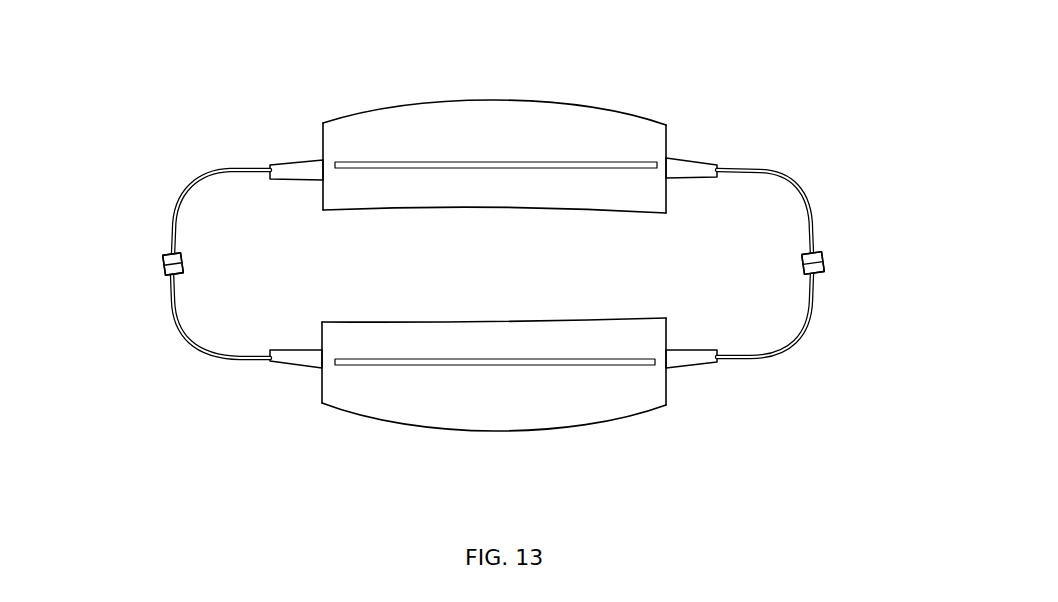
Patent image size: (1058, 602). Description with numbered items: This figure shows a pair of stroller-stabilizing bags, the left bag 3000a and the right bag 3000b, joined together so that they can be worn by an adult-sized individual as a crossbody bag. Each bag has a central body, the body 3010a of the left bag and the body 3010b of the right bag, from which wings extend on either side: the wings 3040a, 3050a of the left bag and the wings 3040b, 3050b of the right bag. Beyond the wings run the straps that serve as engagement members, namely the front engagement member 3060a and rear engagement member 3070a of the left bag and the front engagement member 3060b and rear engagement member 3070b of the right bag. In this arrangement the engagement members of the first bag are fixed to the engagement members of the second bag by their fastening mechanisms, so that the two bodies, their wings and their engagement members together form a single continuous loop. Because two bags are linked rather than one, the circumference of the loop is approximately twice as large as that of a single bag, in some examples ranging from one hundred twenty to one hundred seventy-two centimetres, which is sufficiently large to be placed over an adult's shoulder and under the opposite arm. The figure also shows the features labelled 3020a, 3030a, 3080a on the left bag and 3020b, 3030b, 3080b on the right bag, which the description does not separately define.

The left bag 3000a is at (497, 454).
The right bag 3000b is at (506, 146).
The body 3010a is at (377, 417).
The body 3010b is at (380, 111).
The mask body end portion 3020a is at (309, 414).
The mask body end portion 3020b is at (688, 136).
The mask body side edge 3030a is at (690, 398).
The mask body side edge 3030b is at (299, 128).
The wing 3040a is at (278, 368).
The wing 3040b is at (690, 179).
The wing 3050a is at (705, 370).
The wing 3050b is at (300, 181).
The front engagement member 3060a is at (183, 336).
The front engagement member 3060b is at (800, 186).
The rear engagement member 3070a is at (913, 403).
The rear engagement member 3070b is at (205, 172).
The slot 3080a is at (520, 366).
The slot 3080b is at (498, 161).